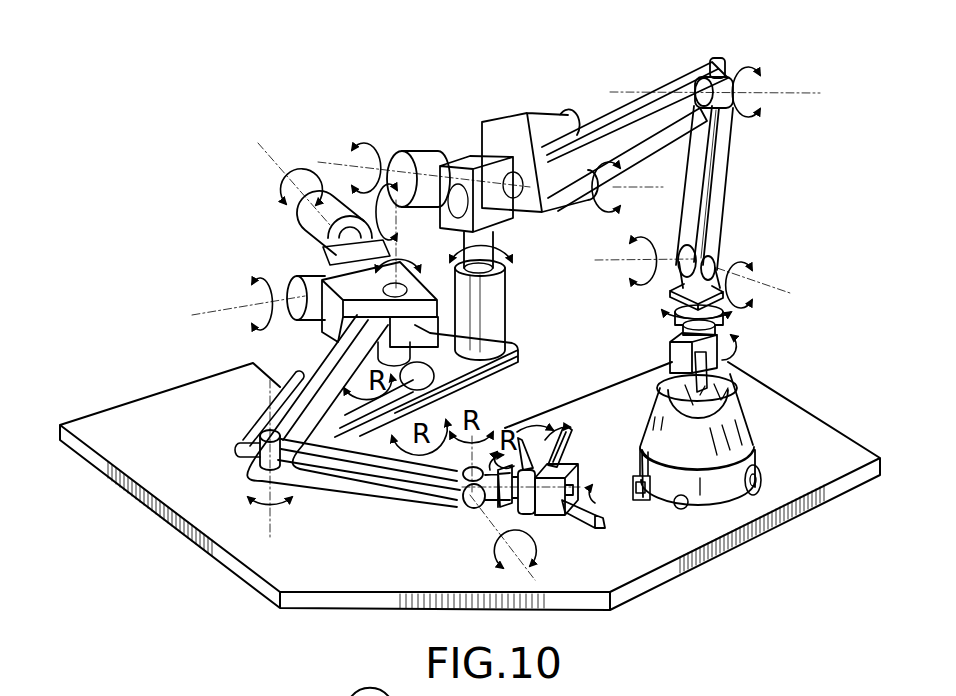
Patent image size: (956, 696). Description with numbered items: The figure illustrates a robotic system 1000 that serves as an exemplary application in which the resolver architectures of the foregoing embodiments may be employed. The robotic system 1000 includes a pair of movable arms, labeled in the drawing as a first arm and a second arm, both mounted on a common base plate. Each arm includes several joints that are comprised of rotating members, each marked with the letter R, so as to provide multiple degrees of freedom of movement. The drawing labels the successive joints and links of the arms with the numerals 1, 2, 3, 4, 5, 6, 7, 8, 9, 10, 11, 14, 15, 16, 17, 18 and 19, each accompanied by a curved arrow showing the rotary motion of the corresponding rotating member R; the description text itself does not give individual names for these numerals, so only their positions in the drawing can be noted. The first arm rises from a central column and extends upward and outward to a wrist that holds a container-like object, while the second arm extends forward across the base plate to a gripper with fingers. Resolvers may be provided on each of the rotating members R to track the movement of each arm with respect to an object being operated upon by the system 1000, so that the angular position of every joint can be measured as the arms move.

The robotic system 1000 is at (163, 133).
The first joint / rotary actuator 1 is at (277, 183).
The second joint / rotary actuator 2 is at (362, 148).
The third joint hinge block 3 is at (408, 208).
The column / lift shaft 4 is at (508, 260).
The arm 1 joint 5 is at (635, 206).
The arm 1 elbow joint 6 is at (765, 70).
The base joint block 7 is at (410, 263).
The wrist joint 8 is at (630, 278).
The wrist rotary joint 9 is at (769, 260).
The base rotary joint 10 is at (255, 283).
The arm 2 link 11 is at (357, 382).
The arm 2 pivot joint 14 is at (288, 535).
The arm 2 wrist joint 15 is at (487, 551).
The gripper body 16 is at (513, 505).
The gripper finger 17 is at (596, 498).
The gripper finger 18 is at (578, 455).
The end effector holding container 19 is at (662, 316).